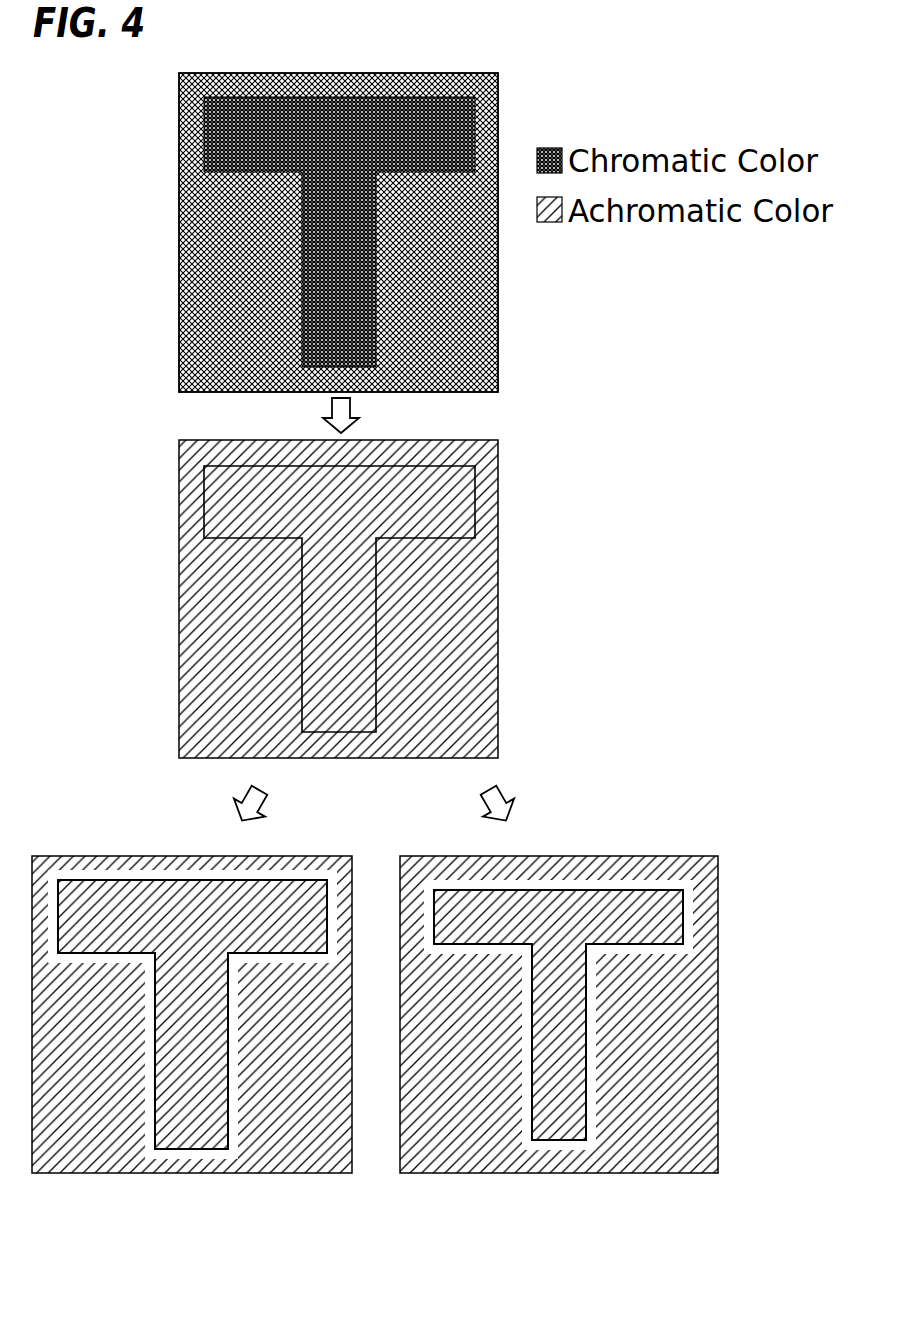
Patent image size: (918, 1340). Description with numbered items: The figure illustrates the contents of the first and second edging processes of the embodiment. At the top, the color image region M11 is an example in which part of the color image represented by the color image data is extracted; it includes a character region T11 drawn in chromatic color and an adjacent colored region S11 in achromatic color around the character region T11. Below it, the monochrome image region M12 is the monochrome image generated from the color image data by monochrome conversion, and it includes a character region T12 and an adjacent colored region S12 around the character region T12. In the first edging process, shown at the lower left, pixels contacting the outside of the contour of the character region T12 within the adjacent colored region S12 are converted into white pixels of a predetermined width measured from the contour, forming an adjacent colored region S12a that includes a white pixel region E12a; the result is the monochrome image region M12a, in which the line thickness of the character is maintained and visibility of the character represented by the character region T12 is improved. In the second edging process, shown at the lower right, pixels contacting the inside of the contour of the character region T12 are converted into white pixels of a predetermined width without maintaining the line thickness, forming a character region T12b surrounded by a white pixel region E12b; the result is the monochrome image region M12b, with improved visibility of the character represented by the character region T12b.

The character region T11 is at (386, 73).
The color image region M11 is at (375, 220).
The adjacent colored region S11 is at (498, 347).
The character region T12 is at (386, 440).
The monochrome image region M12 is at (359, 782).
The adjacent colored region S12 is at (498, 651).
The monochrome image region M12a is at (228, 992).
The adjacent colored region S12a is at (290, 856).
The white pixel region E12a is at (340, 895).
The monochrome image region M12b is at (569, 992).
The character region T12b is at (448, 890).
The white pixel region E12b is at (660, 880).